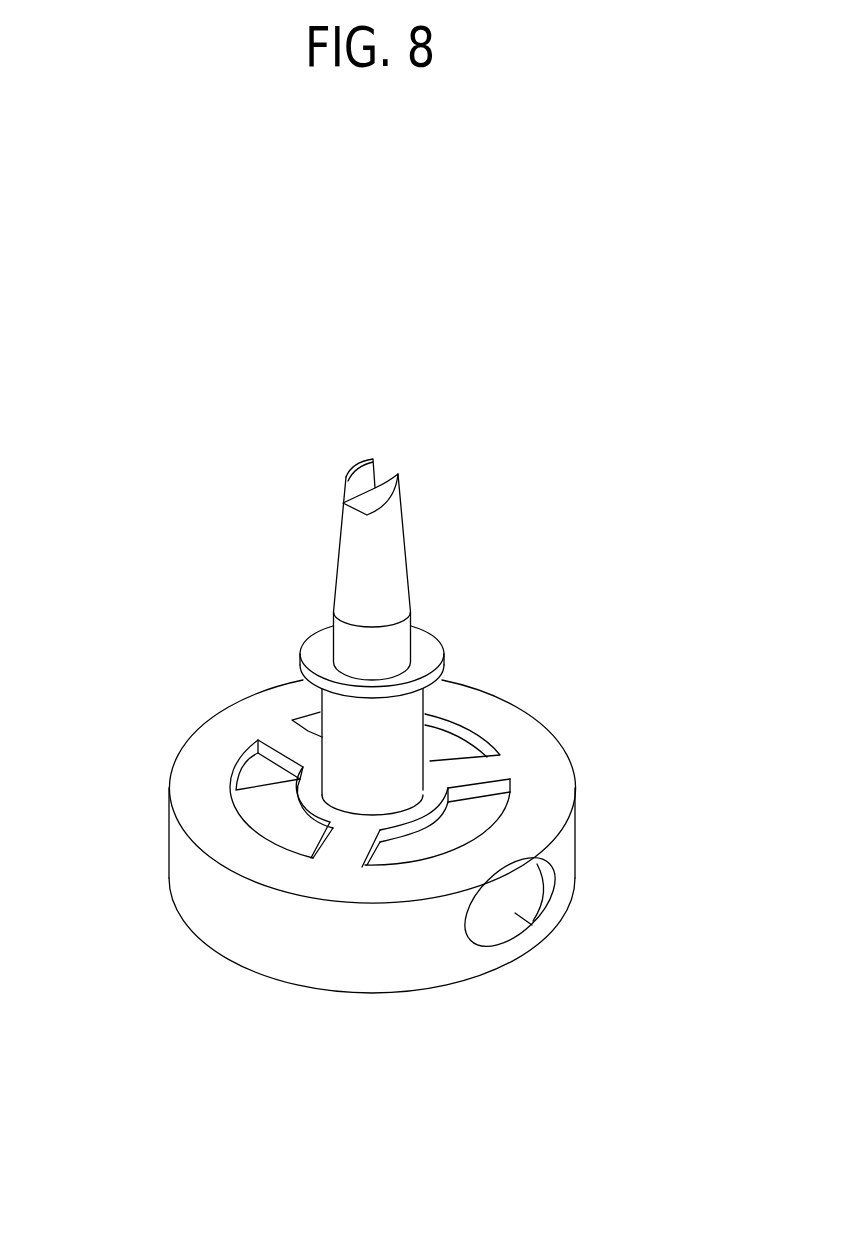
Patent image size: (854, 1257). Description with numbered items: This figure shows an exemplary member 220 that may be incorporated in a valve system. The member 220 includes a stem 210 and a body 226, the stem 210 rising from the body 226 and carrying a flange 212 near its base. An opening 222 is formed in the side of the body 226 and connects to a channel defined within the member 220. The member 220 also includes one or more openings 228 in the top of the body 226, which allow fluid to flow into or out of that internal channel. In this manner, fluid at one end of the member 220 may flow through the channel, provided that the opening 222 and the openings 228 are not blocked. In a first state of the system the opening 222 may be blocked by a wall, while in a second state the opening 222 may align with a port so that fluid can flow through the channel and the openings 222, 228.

The stem 210 is at (405, 549).
The flange 212 is at (442, 657).
The member 220 is at (160, 576).
The opening 222 is at (503, 947).
The body 226 is at (575, 830).
The openings 228 is at (282, 828).